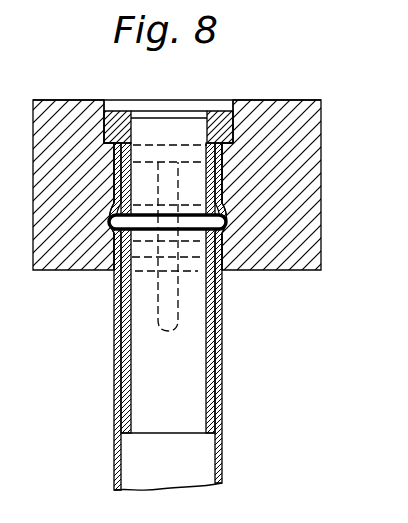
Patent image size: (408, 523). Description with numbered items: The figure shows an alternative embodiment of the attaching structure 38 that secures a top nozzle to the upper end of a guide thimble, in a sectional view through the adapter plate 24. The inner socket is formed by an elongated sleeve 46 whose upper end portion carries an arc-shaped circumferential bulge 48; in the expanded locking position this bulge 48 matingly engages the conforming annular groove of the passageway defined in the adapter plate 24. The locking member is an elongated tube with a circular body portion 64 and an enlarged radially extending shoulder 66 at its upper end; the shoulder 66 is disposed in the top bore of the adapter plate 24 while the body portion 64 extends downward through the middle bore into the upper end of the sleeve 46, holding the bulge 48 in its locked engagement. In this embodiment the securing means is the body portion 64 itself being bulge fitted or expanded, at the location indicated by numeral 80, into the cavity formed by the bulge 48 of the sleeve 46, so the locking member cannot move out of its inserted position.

The attaching structure 38 is at (65, 97).
The adapter plate 24 is at (288, 272).
The circumferential bulge 48 is at (81, 258).
The enlarged radially extending shoulder 66 is at (226, 131).
The bulge fitted location 80 is at (226, 222).
The body portion 64 is at (206, 393).
The sleeve 46 is at (223, 431).